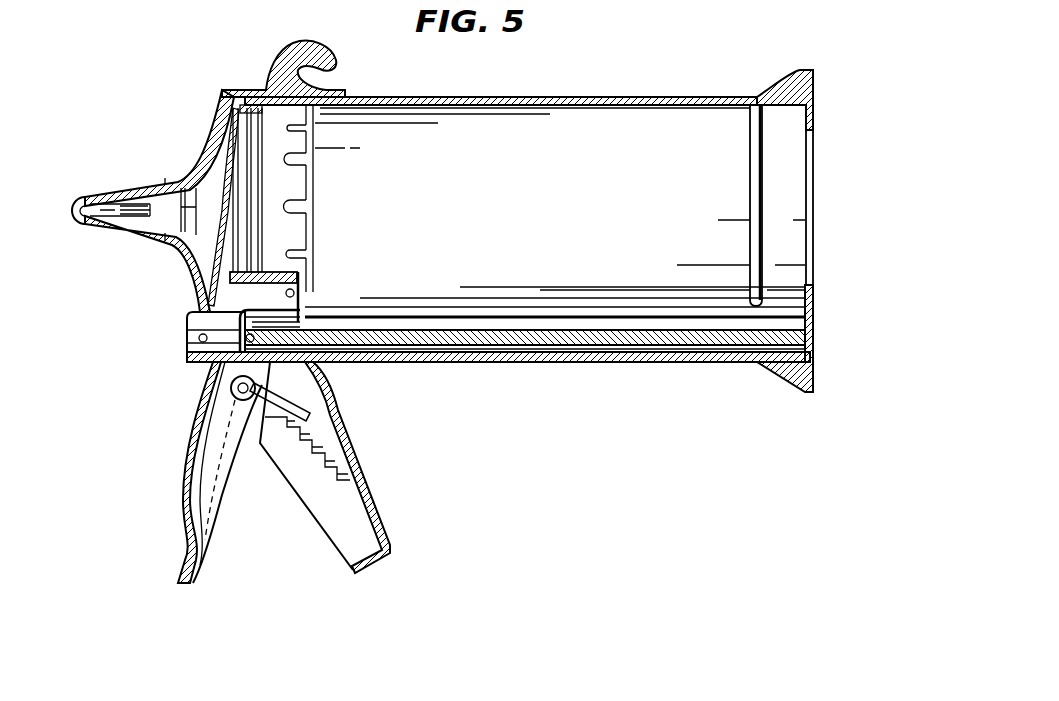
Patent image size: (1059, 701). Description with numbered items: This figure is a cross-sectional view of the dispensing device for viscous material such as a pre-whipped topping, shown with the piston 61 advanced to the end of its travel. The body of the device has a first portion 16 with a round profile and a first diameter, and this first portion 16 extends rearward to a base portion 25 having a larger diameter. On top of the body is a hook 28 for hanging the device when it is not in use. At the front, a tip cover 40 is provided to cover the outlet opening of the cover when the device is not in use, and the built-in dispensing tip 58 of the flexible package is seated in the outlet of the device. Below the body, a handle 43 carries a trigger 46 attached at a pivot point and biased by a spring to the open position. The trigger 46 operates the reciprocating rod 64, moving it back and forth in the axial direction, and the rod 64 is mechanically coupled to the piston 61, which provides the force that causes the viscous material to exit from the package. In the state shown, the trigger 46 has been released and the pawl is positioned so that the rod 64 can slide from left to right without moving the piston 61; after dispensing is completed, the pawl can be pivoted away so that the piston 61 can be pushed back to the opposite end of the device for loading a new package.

The first portion 16 is at (604, 96).
The base portion 25 is at (816, 82).
The hook 28 is at (337, 58).
The tip cover 40 is at (103, 203).
The handle 43 is at (355, 525).
The trigger 46 is at (217, 487).
The built-in dispensing tip 58 is at (162, 237).
The piston 61 is at (298, 183).
The reciprocating rod 64 is at (578, 338).